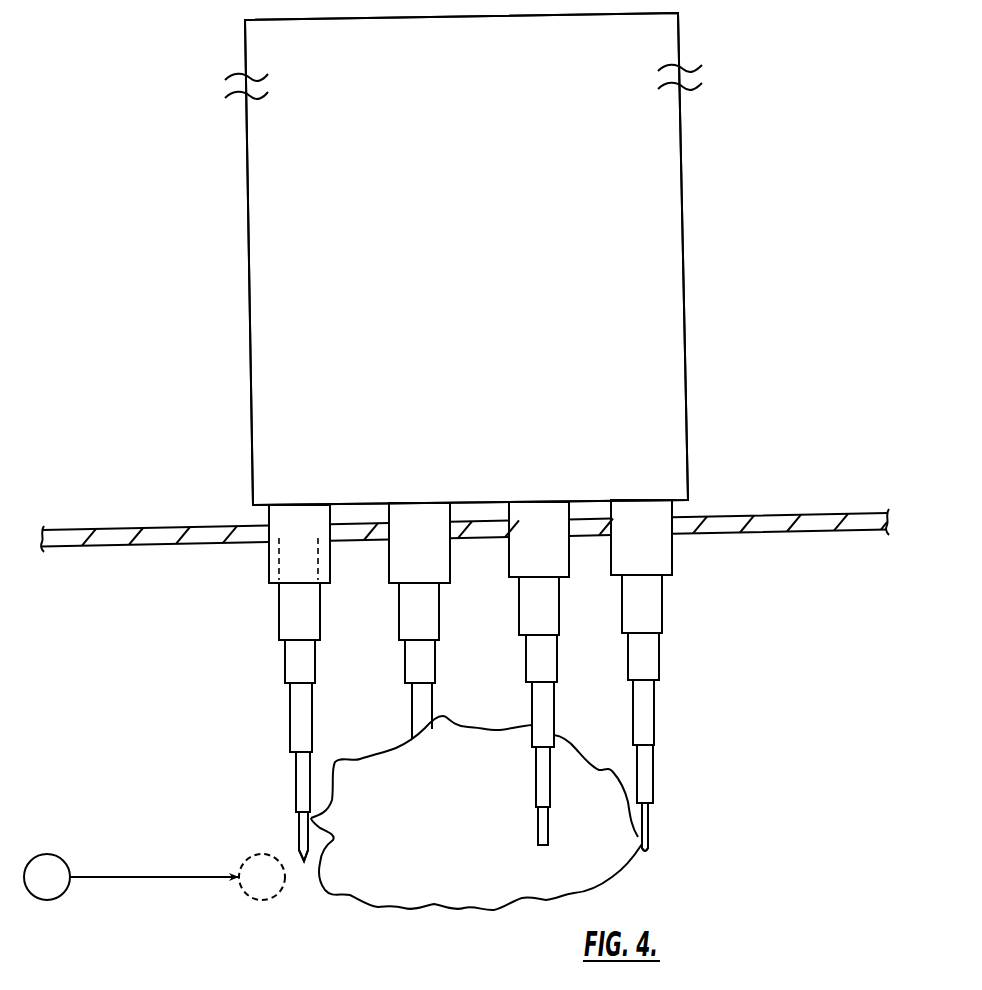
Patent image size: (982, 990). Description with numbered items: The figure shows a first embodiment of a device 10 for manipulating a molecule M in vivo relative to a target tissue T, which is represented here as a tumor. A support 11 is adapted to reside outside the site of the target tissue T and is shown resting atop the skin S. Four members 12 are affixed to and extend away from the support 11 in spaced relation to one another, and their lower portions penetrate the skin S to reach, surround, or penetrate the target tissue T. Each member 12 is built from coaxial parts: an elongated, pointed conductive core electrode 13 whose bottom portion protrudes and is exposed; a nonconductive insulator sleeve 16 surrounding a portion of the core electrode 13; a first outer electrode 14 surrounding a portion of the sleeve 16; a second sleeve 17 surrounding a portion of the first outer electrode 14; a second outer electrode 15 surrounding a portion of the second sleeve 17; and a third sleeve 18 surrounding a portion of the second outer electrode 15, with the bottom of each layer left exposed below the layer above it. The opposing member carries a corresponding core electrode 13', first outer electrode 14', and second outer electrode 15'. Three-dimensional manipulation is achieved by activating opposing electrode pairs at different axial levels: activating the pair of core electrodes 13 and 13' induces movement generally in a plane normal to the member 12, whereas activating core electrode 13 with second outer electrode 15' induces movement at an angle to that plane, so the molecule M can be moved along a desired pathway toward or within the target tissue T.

The device 10 is at (716, 229).
The support 11 is at (499, 219).
The member 12 is at (258, 568).
The core electrode 13 is at (673, 827).
The core electrode of opposing member 13' is at (269, 831).
The first outer electrode 14 is at (669, 712).
The first outer electrode of opposing member 14' is at (267, 717).
The second outer electrode 15 is at (665, 604).
The second outer electrode of opposing member 15' is at (267, 614).
The insulator sleeve 16 is at (648, 777).
The second sleeve 17 is at (648, 667).
The third sleeve 18 is at (658, 558).
The skin S is at (82, 528).
The target tissue T is at (462, 840).
The molecule M is at (58, 892).